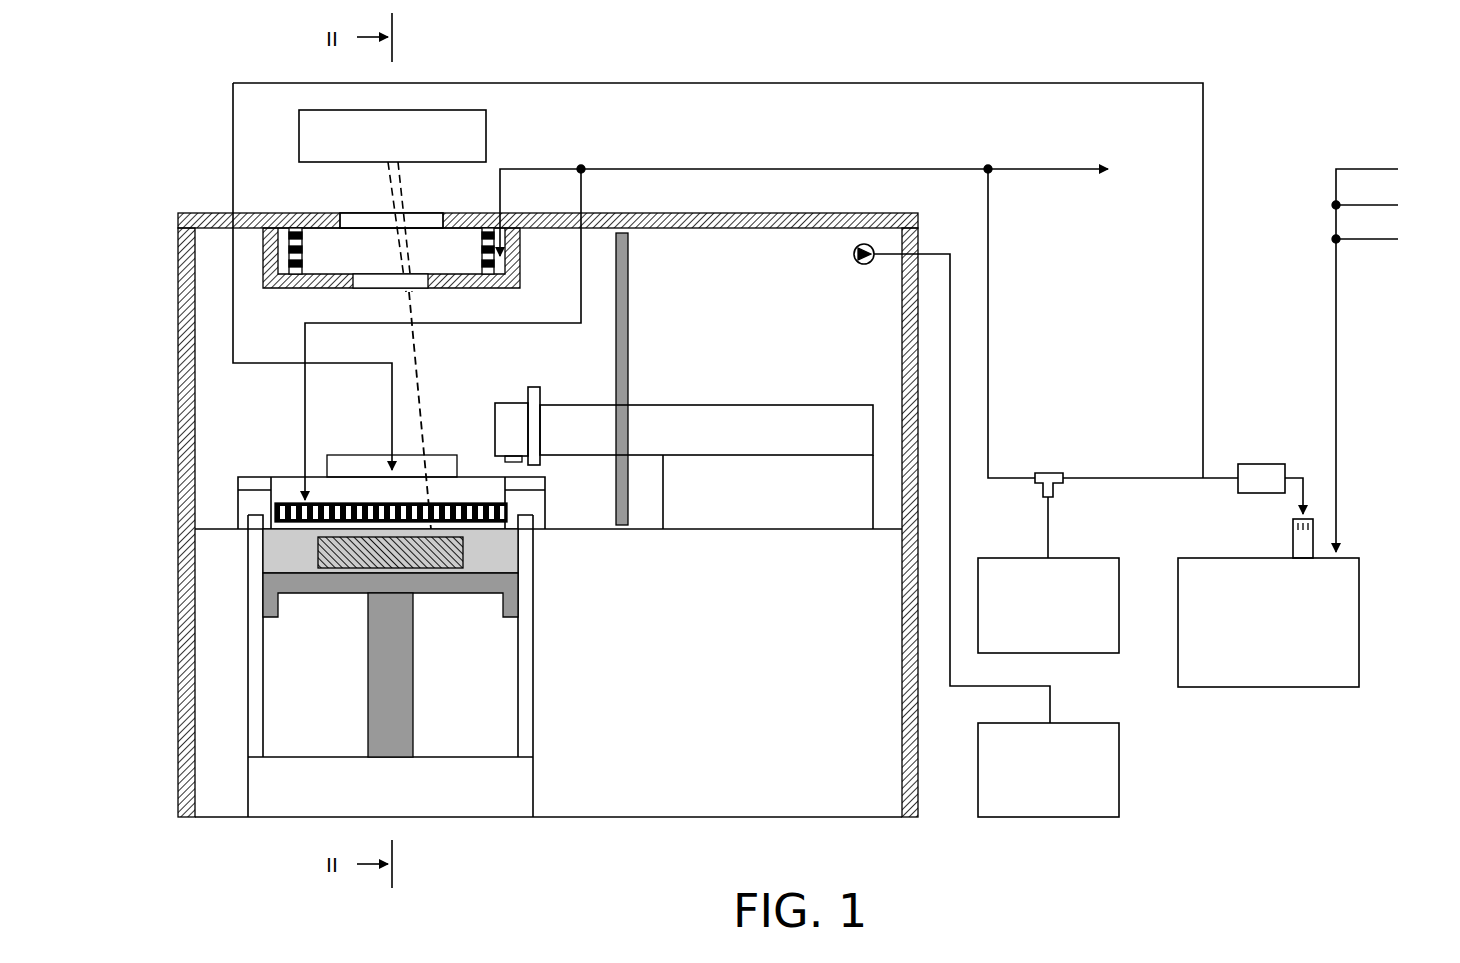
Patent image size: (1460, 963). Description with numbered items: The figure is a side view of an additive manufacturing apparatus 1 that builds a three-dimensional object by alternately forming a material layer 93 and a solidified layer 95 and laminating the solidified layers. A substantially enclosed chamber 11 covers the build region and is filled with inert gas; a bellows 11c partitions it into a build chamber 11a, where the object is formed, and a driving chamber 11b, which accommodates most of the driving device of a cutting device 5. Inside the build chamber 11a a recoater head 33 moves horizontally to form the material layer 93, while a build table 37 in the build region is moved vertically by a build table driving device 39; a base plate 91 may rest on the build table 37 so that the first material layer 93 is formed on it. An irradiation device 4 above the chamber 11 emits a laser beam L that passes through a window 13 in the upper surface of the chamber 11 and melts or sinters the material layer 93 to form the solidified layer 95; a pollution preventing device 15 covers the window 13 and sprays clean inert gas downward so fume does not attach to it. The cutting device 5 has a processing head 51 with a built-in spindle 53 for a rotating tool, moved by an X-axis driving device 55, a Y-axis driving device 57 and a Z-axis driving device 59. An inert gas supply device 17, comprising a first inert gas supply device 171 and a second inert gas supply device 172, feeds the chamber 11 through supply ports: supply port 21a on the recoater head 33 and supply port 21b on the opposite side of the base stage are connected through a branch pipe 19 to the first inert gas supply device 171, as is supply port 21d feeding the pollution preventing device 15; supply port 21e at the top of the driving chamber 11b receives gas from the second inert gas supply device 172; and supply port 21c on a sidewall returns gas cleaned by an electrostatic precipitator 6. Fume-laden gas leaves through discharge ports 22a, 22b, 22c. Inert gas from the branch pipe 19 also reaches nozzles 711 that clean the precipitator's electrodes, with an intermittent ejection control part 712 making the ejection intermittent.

The additive manufacturing apparatus 1 is at (122, 128).
The irradiation device 4 is at (470, 134).
The cutting device 5 is at (520, 384).
The electrostatic precipitator 6 is at (1352, 568).
The chamber 11 is at (183, 218).
The build chamber 11a is at (240, 404).
The driving chamber 11b is at (761, 329).
The bellows 11c is at (628, 270).
The window 13 is at (360, 218).
The pollution preventing device 15 is at (288, 298).
The inert gas supply device 17 is at (1166, 786).
The branch pipe 19 is at (1058, 472).
The supply port 21a is at (290, 482).
The supply port 21b is at (829, 185).
The supply port 21c is at (344, 458).
The supply port 21d is at (490, 214).
The supply port 21e is at (852, 256).
The discharge port 22a is at (1392, 355).
The discharge port 22b is at (1391, 206).
The discharge port 22c is at (1390, 239).
The recoater head 33 is at (240, 505).
The build table 37 is at (306, 600).
The build table driving device 39 is at (412, 640).
The processing head 51 is at (502, 414).
The spindle 53 is at (500, 462).
The X-axis driving device 55 is at (814, 532).
The Y-axis driving device 57 is at (818, 412).
The Z-axis driving device 59 is at (540, 396).
The base plate 91 is at (446, 573).
The material layer 93 is at (370, 537).
The solidified layer 95 is at (320, 555).
The first inert gas supply device 171 is at (1100, 566).
The second inert gas supply device 172 is at (1100, 732).
The nozzles 711 is at (1293, 536).
The intermittent ejection control part 712 is at (1270, 468).
The laser beam L is at (416, 364).